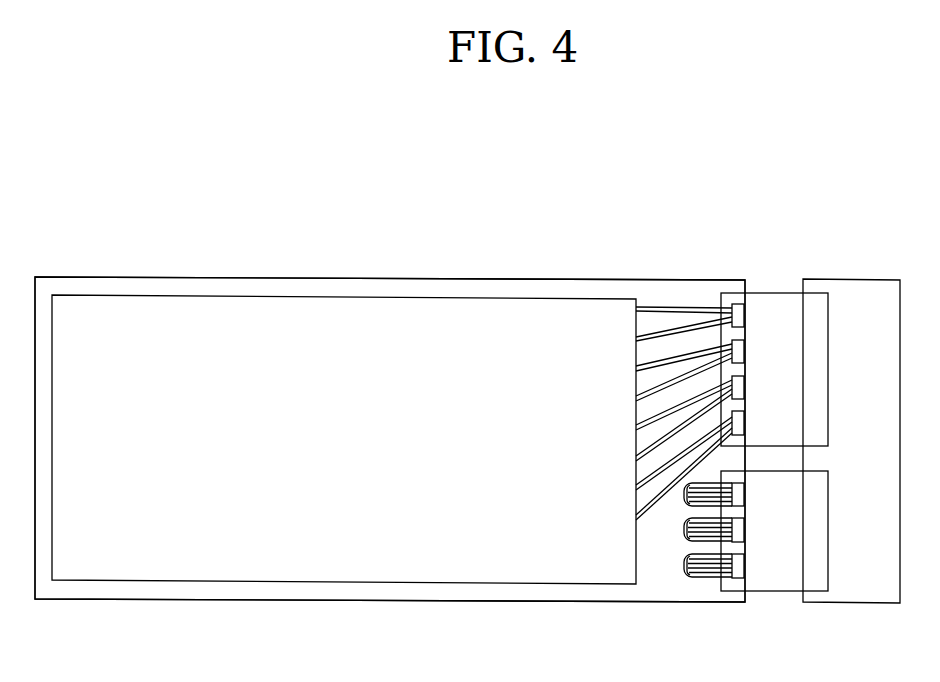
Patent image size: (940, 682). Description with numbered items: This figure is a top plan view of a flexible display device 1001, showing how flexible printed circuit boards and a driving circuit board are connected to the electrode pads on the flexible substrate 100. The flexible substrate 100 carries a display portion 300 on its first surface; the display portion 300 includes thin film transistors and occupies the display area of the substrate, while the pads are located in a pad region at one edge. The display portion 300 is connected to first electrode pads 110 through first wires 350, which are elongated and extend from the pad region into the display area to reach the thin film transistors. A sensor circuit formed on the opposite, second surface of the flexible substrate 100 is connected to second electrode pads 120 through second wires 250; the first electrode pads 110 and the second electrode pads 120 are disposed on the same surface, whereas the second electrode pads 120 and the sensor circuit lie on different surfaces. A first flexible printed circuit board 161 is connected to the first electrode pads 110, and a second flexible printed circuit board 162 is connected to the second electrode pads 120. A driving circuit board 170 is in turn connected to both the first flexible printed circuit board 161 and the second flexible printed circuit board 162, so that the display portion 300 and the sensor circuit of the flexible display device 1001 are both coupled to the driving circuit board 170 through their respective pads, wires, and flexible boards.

The flexible display device 1001 is at (529, 219).
The flexible substrate 100 is at (436, 288).
The display portion 300 is at (324, 327).
The first wires 350 is at (658, 304).
The first electrode pads 110 is at (738, 304).
The second electrode pads 120 is at (737, 573).
The first flexible printed circuit board 161 is at (777, 307).
The second flexible printed circuit board 162 is at (775, 573).
The driving circuit board 170 is at (860, 307).
The second wires 250 is at (707, 578).